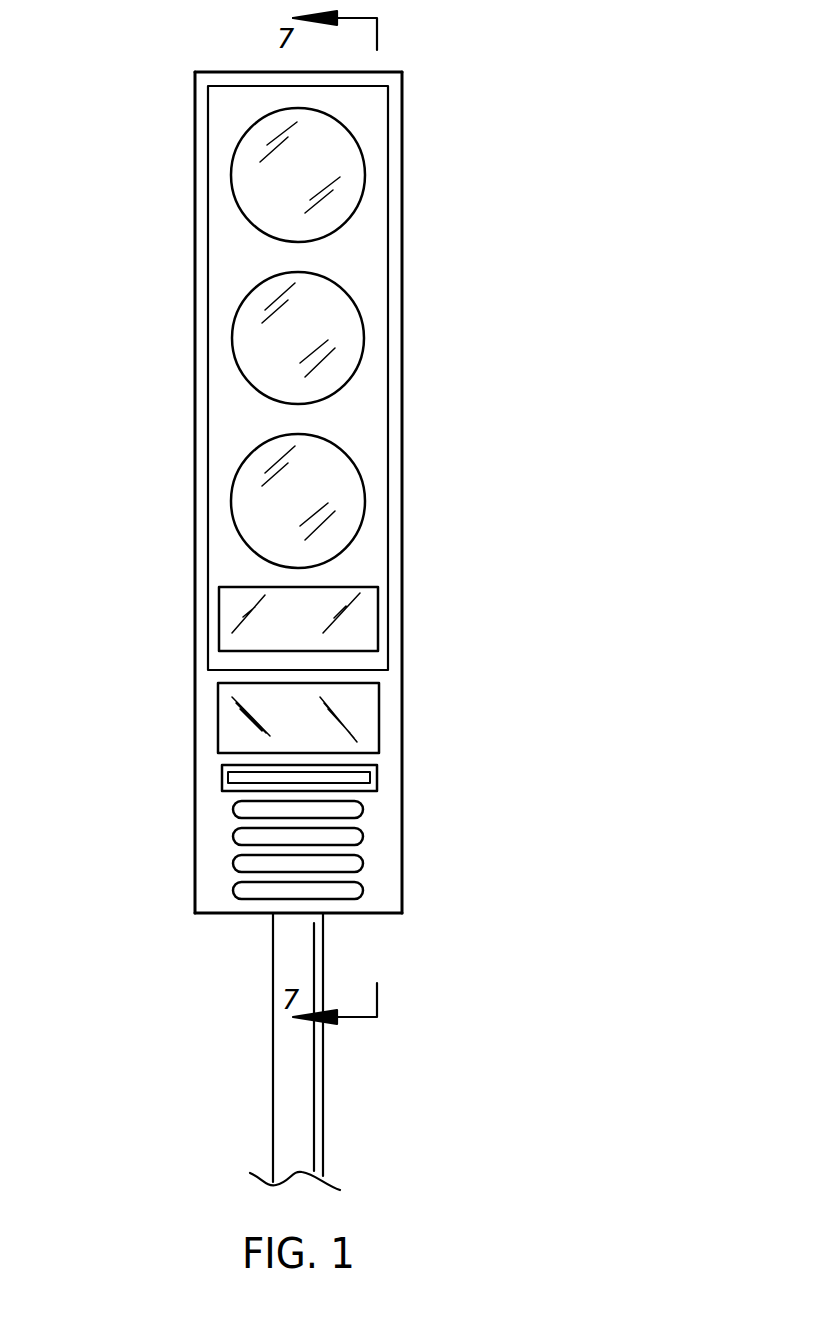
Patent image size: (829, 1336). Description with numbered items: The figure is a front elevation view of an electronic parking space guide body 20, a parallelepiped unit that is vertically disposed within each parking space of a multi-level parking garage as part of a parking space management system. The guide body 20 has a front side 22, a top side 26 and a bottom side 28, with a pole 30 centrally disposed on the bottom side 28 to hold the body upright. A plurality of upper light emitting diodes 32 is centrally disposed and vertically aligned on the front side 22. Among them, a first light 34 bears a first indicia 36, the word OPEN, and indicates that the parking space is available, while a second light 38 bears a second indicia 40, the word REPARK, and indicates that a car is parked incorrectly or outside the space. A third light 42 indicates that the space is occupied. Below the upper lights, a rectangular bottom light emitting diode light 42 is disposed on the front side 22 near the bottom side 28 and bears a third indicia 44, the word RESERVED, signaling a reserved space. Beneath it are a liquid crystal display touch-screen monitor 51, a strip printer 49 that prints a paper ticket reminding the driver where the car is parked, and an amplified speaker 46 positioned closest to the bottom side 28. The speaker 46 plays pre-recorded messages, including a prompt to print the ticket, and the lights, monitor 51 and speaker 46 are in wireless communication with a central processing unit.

The electronic parking space guide body 20 is at (402, 72).
The front side 22 is at (397, 408).
The top side 26 is at (240, 72).
The bottom side 28 is at (368, 913).
The pole 30 is at (325, 1060).
The plurality of upper light emitting diodes 32 is at (274, 390).
The first light 34 is at (356, 501).
The first indicia 36 is at (325, 502).
The second light 38 is at (347, 368).
The second indicia 40 is at (359, 325).
The third light 42 is at (343, 163).
The third indicia 44 is at (360, 608).
The amplified speaker 46 is at (360, 837).
The strip printer 49 is at (368, 780).
The liquid crystal display touch-screen monitor 51 is at (372, 697).